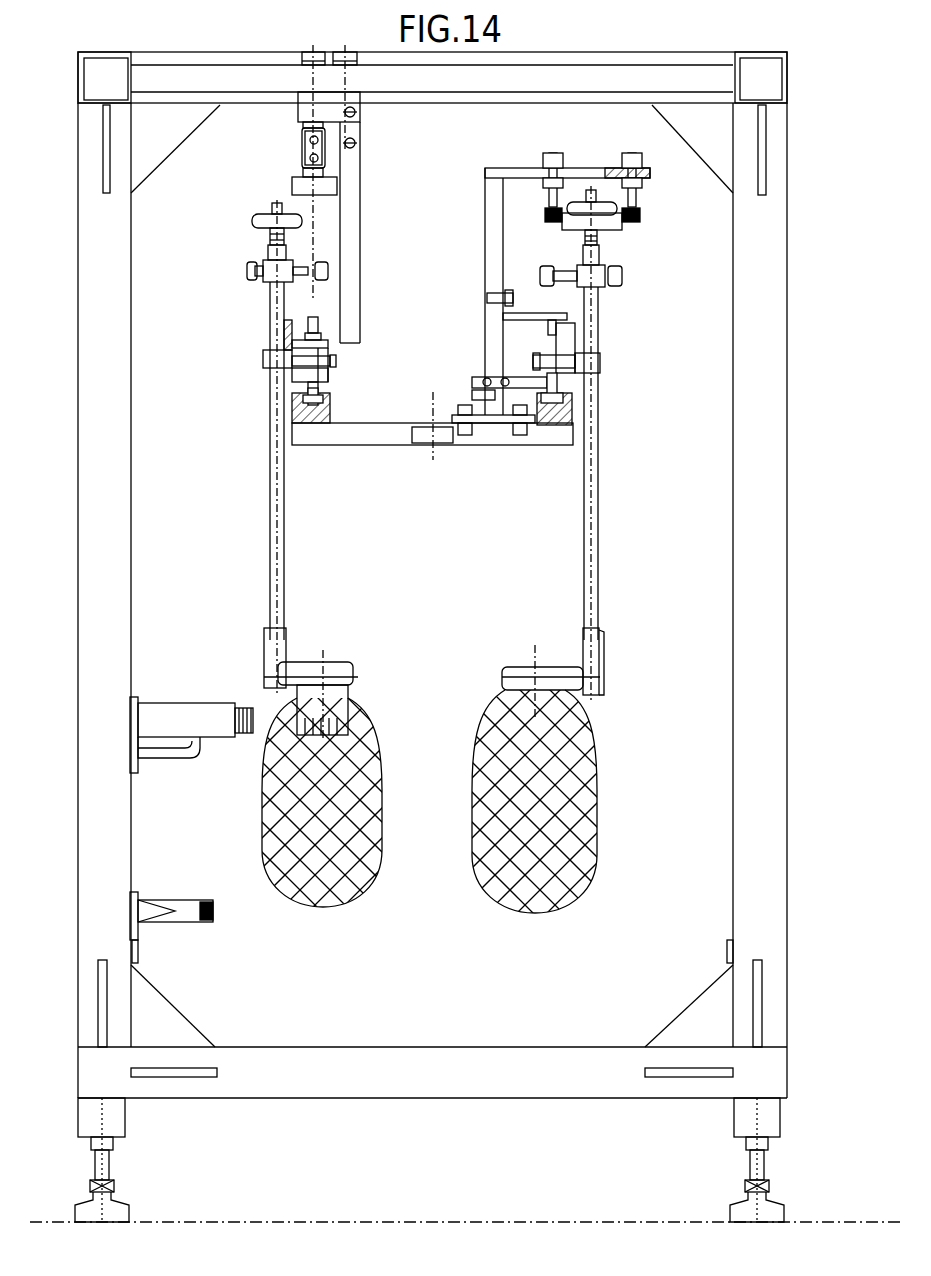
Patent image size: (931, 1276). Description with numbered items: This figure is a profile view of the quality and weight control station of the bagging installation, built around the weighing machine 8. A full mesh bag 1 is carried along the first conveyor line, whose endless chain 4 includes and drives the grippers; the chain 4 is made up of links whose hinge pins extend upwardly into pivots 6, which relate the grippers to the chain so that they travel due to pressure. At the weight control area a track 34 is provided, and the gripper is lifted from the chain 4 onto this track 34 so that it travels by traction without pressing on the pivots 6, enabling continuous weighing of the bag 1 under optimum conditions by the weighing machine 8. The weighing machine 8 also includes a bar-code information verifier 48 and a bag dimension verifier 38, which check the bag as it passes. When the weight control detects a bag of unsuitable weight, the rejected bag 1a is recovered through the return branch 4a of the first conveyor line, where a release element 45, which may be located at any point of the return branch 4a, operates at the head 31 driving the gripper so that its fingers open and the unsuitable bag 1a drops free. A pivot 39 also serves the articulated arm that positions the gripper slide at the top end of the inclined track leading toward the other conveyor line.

The mesh bag 1 is at (293, 797).
The rejected bag 1a is at (555, 818).
The endless chain 4 is at (294, 398).
The return branch 4a is at (580, 395).
The pivot 6 is at (293, 379).
The weighing machine 8 is at (792, 262).
The head 31 is at (637, 160).
The track 34 is at (323, 333).
The bag dimension verifier 38 is at (192, 907).
The pivot 39 is at (247, 268).
The release element 45 is at (615, 228).
The bar-code information verifier 48 is at (236, 713).